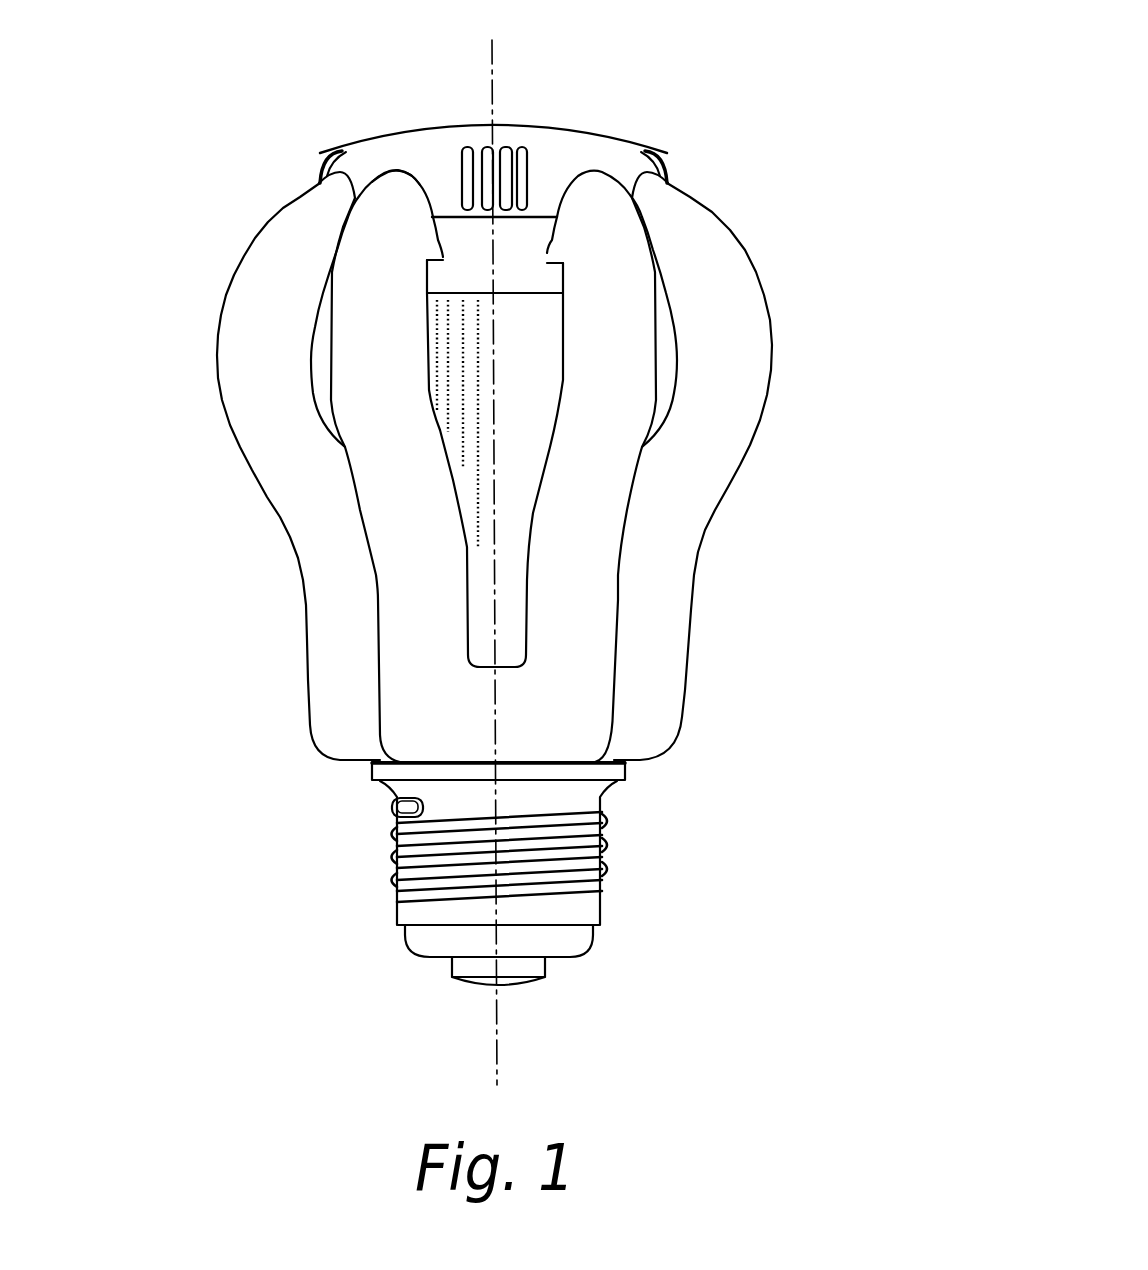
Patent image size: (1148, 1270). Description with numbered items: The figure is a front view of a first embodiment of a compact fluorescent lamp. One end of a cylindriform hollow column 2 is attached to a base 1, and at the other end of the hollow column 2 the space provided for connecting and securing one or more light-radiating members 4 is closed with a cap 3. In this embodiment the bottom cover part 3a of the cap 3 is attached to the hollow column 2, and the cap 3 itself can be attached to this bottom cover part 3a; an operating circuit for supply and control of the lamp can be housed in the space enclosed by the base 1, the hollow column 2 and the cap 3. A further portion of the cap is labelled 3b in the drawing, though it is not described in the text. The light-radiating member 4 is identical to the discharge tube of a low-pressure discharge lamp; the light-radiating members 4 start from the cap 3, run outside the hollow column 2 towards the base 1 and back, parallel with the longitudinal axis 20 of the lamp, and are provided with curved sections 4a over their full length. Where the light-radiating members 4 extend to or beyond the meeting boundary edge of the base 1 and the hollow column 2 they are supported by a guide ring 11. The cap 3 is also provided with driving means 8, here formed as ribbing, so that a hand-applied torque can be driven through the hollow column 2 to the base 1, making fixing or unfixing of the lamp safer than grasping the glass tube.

The base 1 is at (572, 907).
The hollow column 2 is at (475, 395).
The cap 3 is at (560, 158).
The bottom cover part 3a is at (447, 273).
The rim of heat sink 3b is at (393, 170).
The light-radiating member 4 is at (610, 450).
The curved section 4a is at (475, 683).
The driving means 8 is at (522, 170).
The guide ring 11 is at (382, 763).
The longitudinal axis 20 is at (488, 68).